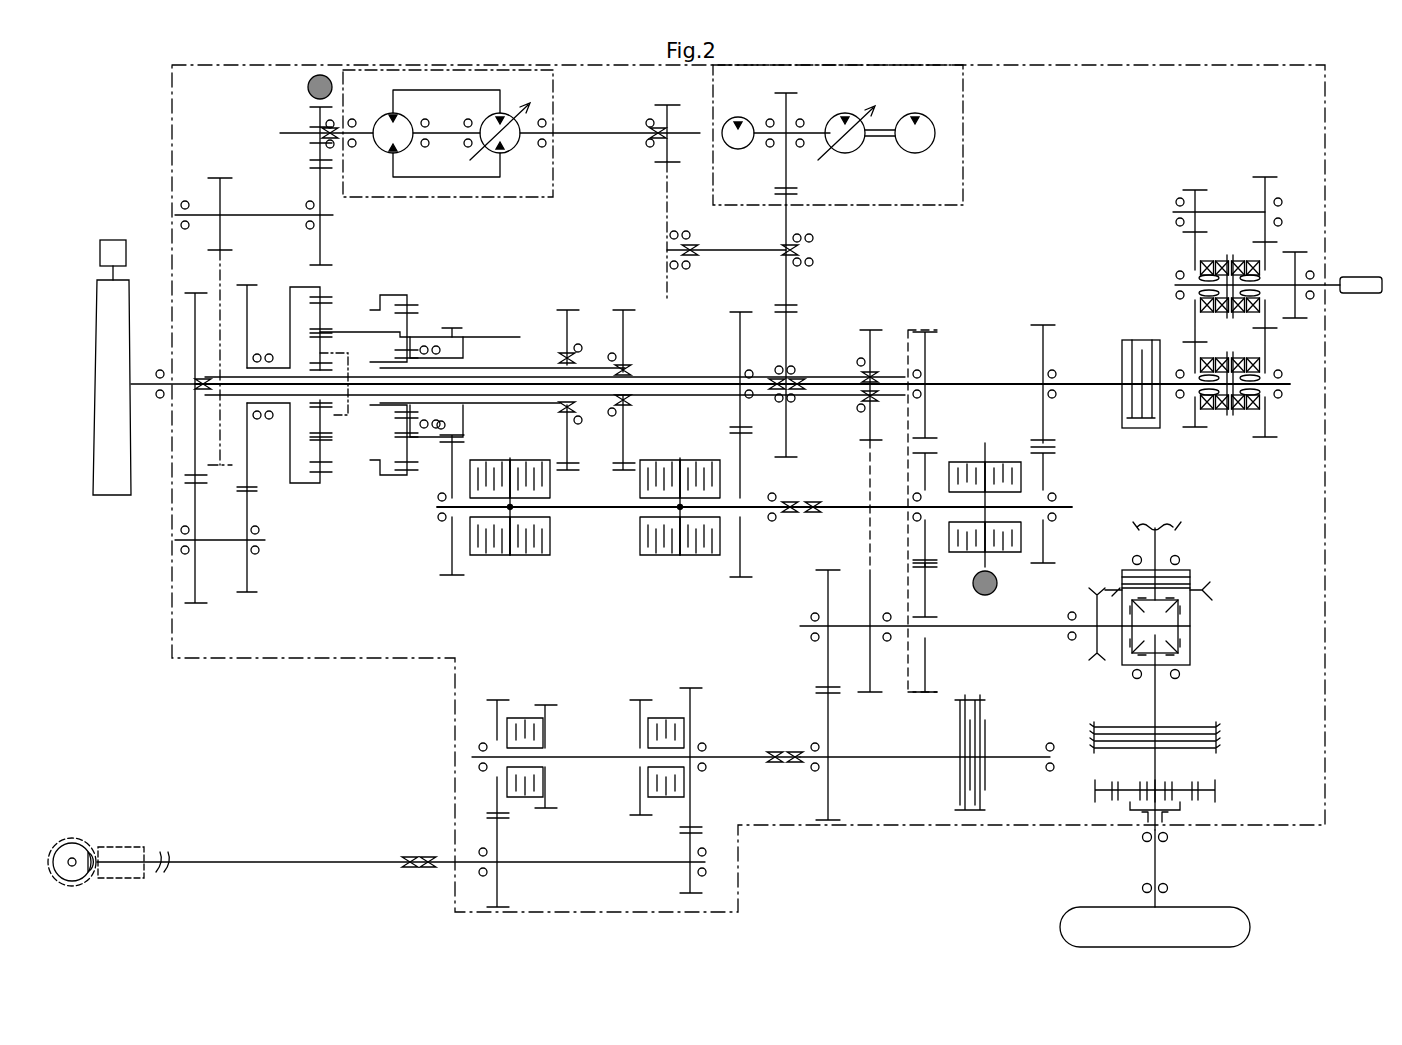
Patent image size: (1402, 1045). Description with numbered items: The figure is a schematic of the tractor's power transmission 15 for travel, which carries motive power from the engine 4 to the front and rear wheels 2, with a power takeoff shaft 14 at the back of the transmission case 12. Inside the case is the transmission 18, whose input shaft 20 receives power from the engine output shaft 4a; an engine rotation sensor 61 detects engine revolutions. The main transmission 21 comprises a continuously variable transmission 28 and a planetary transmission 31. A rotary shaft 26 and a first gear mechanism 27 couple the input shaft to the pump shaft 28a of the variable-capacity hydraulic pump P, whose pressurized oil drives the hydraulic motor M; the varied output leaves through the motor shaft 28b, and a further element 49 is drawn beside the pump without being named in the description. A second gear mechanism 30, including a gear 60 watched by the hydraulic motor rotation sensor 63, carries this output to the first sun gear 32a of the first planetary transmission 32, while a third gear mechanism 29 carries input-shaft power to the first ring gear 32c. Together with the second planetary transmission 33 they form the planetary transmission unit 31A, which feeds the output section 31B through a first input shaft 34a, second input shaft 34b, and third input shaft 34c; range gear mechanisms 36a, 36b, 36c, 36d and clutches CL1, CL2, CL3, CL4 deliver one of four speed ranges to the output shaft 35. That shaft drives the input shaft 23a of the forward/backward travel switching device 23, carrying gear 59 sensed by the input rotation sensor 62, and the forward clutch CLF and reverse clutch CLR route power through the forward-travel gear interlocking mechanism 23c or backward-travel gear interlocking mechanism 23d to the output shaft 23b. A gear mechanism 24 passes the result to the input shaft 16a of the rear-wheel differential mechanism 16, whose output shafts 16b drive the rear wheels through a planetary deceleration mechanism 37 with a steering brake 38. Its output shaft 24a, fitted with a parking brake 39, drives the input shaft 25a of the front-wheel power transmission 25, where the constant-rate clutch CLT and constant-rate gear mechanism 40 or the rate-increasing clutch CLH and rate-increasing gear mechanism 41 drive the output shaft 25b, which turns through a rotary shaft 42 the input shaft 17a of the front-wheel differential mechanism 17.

The rear wheel 2 is at (1250, 927).
The engine 4 is at (113, 495).
The output shaft 4a is at (138, 370).
The transmission case 12 is at (172, 88).
The power takeoff shaft 14 is at (1358, 277).
The power transmission 15 is at (118, 188).
The rear-wheel differential mechanism 16 is at (1250, 618).
The input shaft 16a is at (990, 627).
The output shaft 16b is at (1160, 535).
The front-wheel differential mechanism 17 is at (78, 838).
The input shaft 17a is at (125, 850).
The transmission 18 is at (362, 660).
The input shaft 20 is at (170, 375).
The main transmission 21 is at (341, 570).
The forward/backward travel switching device 23 is at (1028, 286).
The input shaft 23a is at (830, 505).
The output shaft 23b is at (880, 345).
The forward-travel gear interlocking mechanism 23c is at (1055, 455).
The backward-travel gear interlocking mechanism 23d is at (937, 343).
The gear mechanism 24 is at (832, 342).
The output shaft 24a is at (915, 760).
The front-wheel power transmission 25 is at (588, 684).
The input shaft 25a is at (727, 752).
The output shaft 25b is at (610, 866).
The rotary shaft 26 is at (680, 380).
The first gear mechanism 27 is at (709, 226).
The continuously variable transmission 28 is at (484, 151).
The pump shaft 28a is at (582, 136).
The motor shaft 28b is at (303, 135).
The third gear mechanism 29 is at (184, 588).
The second gear mechanism 30 is at (236, 144).
The planetary transmission 31 is at (525, 269).
The planetary transmission unit 31A is at (366, 290).
The output section 31B is at (609, 592).
The first planetary transmission 32 is at (308, 504).
The first sun gear 32a is at (340, 350).
The first ring gear 32c is at (320, 482).
The second planetary transmission 33 is at (401, 492).
The first input shaft 34a is at (432, 345).
The second input shaft 34b is at (535, 360).
The third input shaft 34c is at (705, 398).
The output shaft 35 is at (765, 512).
The first range gear mechanism 36a is at (452, 575).
The second range gear mechanism 36b is at (752, 546).
The third range gear mechanism 36c is at (605, 345).
The fourth range gear mechanism 36d is at (618, 485).
The planetary deceleration mechanism 37 is at (1212, 795).
The steering brake 38 is at (1215, 728).
The parking brake 39 is at (980, 783).
The constant-rate gear mechanism 40 is at (497, 706).
The rate-increasing gear mechanism 41 is at (700, 803).
The rotary shaft 42 is at (272, 860).
The hydraulic motor 49 is at (500, 153).
The gear 59 is at (975, 572).
The gear 60 is at (318, 117).
The engine rotation sensor 61 is at (113, 240).
The input rotation sensor 62 is at (995, 592).
The hydraulic motor rotation sensor 63 is at (318, 75).
The hydraulic pump P is at (520, 152).
The hydraulic motor M is at (375, 143).
The first clutch CL1 is at (490, 560).
The second clutch CL2 is at (710, 560).
The third clutch CL3 is at (540, 560).
The fourth clutch CL4 is at (668, 560).
The reverse clutch CLR is at (962, 462).
The forward clutch CLF is at (1015, 555).
The constant-rate clutch CLT is at (530, 800).
The rate-increasing clutch CLH is at (668, 718).